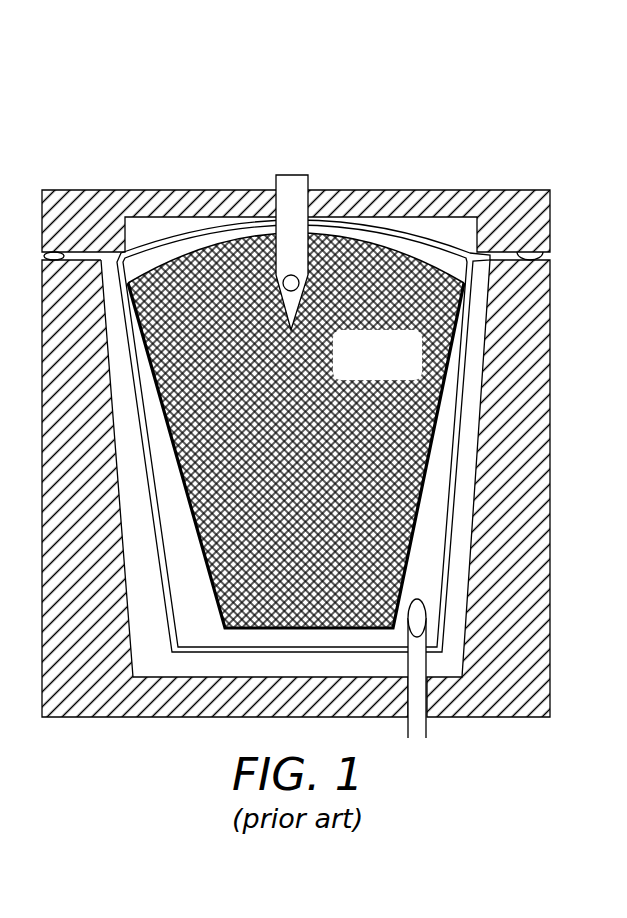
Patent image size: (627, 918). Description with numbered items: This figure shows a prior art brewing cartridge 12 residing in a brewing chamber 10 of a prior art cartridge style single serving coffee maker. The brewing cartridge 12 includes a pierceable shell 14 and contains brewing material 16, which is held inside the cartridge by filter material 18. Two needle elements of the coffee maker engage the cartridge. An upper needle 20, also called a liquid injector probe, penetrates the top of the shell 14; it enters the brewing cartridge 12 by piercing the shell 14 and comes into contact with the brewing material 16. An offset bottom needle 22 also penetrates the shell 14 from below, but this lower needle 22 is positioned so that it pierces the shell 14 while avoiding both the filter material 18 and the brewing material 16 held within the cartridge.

The brewing chamber 10 is at (513, 200).
The brewing cartridge 12 is at (378, 282).
The pierceable shell 14 is at (370, 230).
The brewing material 16 is at (381, 365).
The filter material 18 is at (430, 465).
The upper needle 20 is at (292, 188).
The offset bottom needle 22 is at (417, 725).